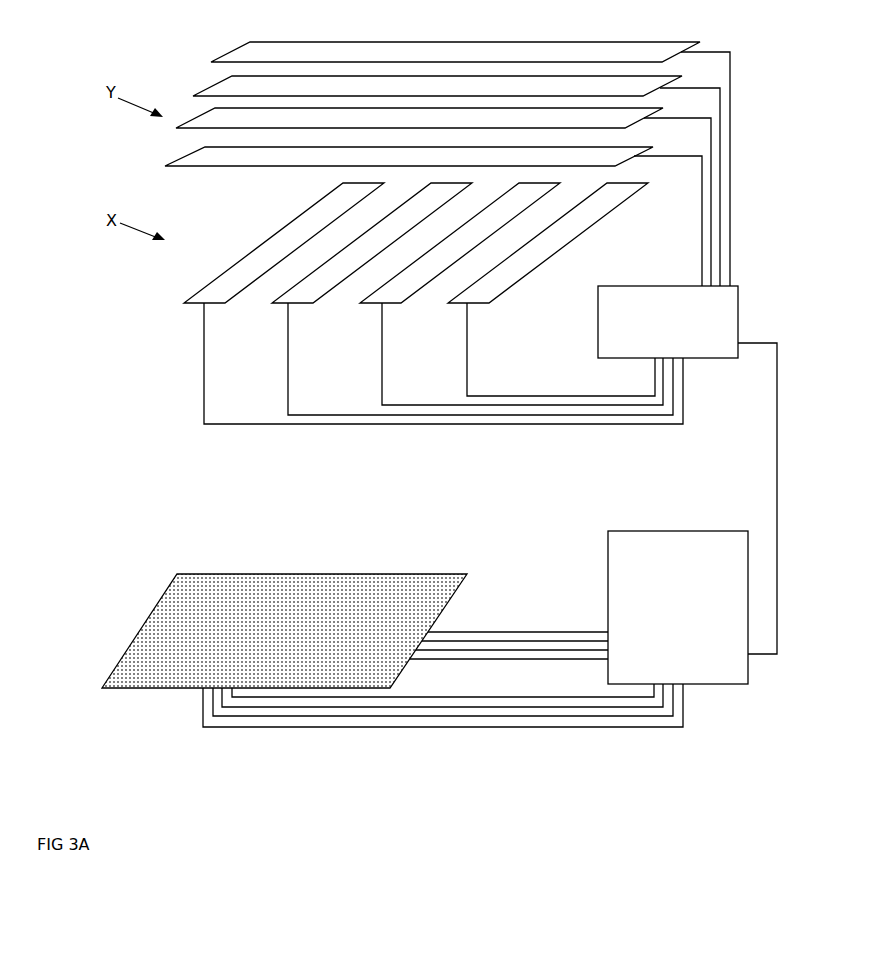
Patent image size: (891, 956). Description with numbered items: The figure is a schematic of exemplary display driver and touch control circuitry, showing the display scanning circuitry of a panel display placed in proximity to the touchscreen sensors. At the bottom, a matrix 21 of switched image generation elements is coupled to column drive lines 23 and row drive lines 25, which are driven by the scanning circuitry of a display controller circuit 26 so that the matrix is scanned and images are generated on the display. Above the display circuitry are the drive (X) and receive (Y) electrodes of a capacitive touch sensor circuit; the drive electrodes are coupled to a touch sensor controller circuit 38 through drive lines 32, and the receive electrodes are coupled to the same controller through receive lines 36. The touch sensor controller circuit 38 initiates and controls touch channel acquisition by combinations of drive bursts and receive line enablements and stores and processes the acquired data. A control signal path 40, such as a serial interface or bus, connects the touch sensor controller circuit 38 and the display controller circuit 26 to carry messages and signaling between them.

The matrix of switched image generation elements 21 is at (130, 690).
The column drive lines 23 is at (347, 728).
The row drive lines 25 is at (527, 625).
The display controller circuit 26 is at (738, 695).
The drive lines 32 is at (535, 428).
The receive lines 36 is at (752, 128).
The touch sensor controller circuit 38 is at (720, 303).
The control signal path 40 is at (785, 515).